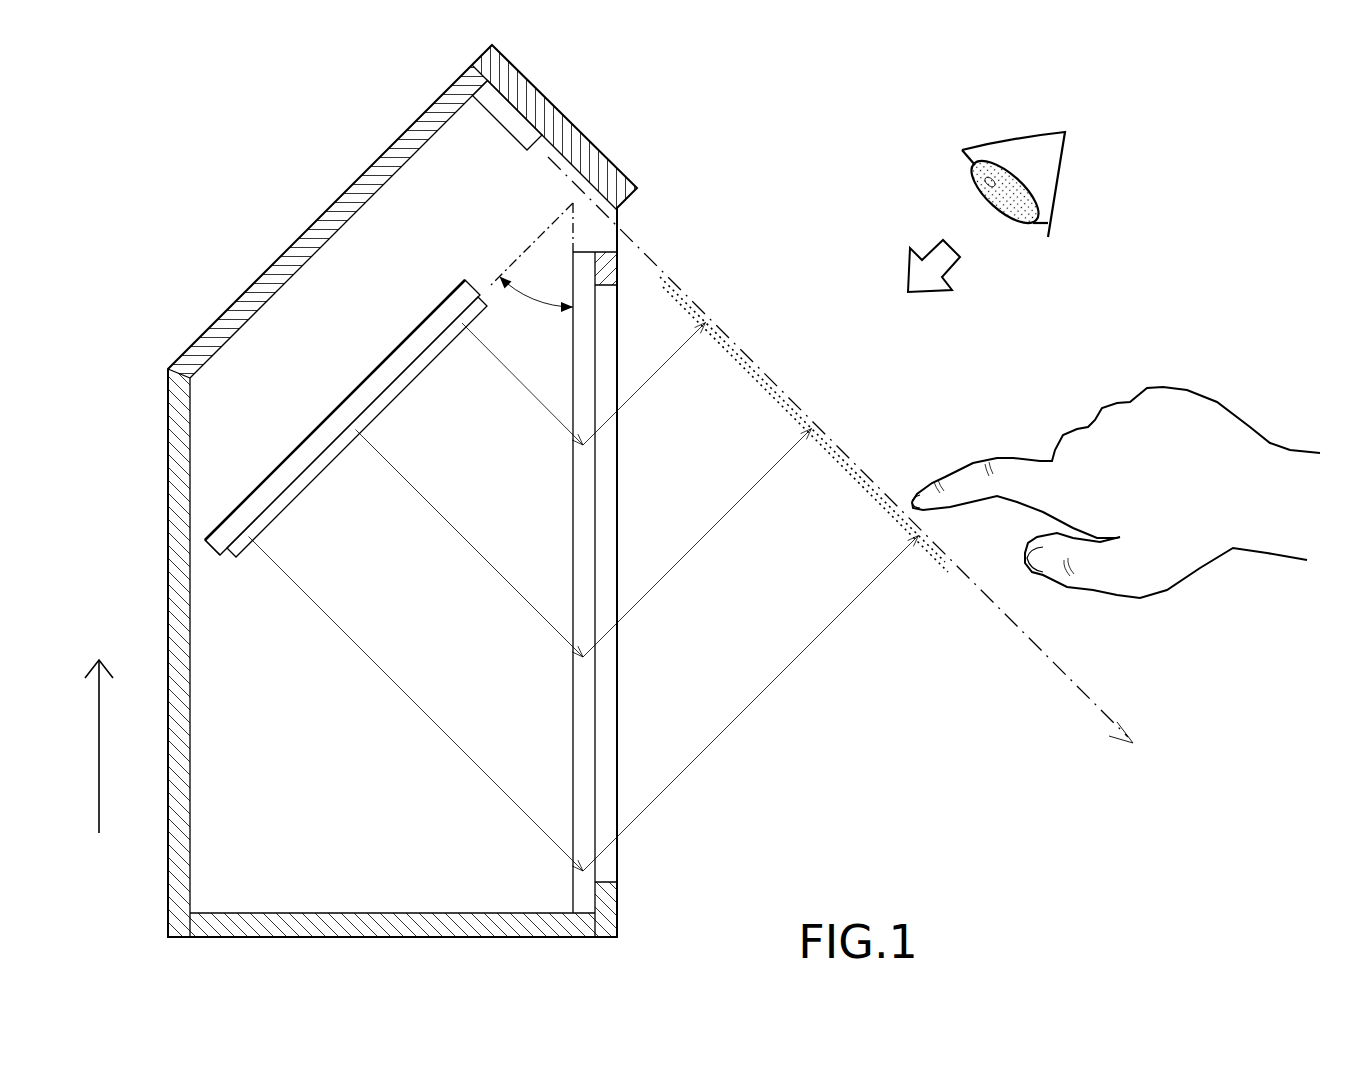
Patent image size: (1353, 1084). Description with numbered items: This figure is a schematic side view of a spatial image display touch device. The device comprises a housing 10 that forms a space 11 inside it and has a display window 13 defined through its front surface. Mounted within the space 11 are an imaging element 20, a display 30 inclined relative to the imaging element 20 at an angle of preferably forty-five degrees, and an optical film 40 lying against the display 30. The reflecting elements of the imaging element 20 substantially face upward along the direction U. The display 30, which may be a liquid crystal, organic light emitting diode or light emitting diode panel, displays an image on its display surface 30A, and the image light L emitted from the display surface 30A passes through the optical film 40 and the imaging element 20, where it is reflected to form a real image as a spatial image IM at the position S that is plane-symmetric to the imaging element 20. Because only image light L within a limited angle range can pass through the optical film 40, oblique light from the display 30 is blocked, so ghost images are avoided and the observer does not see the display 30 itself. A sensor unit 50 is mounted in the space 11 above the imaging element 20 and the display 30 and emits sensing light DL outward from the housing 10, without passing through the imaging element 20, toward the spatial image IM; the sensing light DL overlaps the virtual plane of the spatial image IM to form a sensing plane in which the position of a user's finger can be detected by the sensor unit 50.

The housing 10 is at (313, 186).
The space 11 is at (262, 814).
The display window 13 is at (607, 722).
The imaging element 20 is at (583, 524).
The display 30 is at (380, 378).
The display surface 30A is at (224, 558).
The optical film 40 is at (305, 478).
The sensor unit 50 is at (510, 126).
The image light L is at (490, 778).
The sensing light DL is at (1045, 653).
The position S is at (782, 350).
The spatial image IM is at (852, 483).
The direction U is at (96, 720).